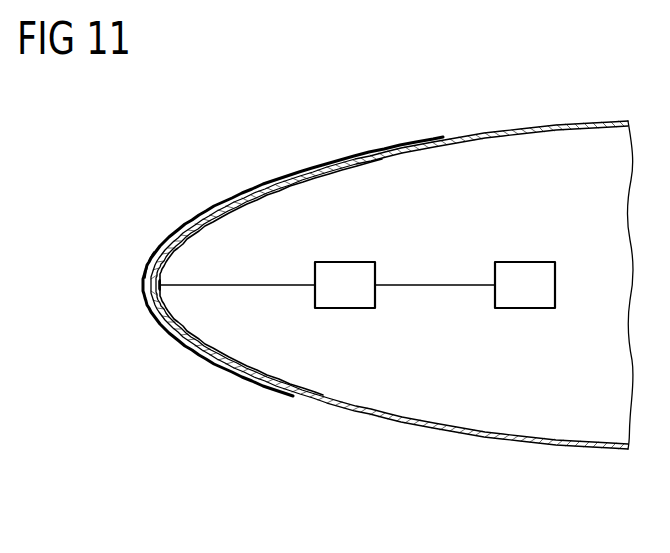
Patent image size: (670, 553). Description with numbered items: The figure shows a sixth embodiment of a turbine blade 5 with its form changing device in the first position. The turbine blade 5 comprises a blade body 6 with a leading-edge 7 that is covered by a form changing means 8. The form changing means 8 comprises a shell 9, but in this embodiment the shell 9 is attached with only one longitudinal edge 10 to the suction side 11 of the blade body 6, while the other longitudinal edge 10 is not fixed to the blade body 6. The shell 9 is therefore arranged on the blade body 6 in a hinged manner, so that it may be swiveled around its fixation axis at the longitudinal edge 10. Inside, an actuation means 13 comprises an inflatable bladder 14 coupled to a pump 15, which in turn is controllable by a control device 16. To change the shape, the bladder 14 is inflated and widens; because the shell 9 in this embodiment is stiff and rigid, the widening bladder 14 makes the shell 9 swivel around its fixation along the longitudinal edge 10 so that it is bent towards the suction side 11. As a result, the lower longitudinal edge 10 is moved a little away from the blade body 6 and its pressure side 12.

The turbine blade 5 is at (225, 423).
The blade body 6 is at (580, 452).
The leading-edge 7 is at (178, 271).
The form changing means 8 is at (133, 322).
The shell 9 is at (152, 251).
The longitudinal edge 10 is at (438, 135).
The suction side 11 is at (531, 123).
The pressure side 12 is at (528, 440).
The actuation means 13 is at (252, 326).
The inflatable bladder 14 is at (158, 283).
The pump 15 is at (347, 262).
The control device 16 is at (524, 262).